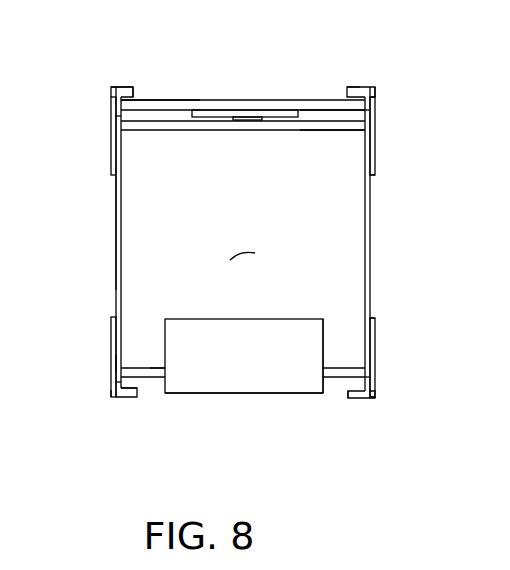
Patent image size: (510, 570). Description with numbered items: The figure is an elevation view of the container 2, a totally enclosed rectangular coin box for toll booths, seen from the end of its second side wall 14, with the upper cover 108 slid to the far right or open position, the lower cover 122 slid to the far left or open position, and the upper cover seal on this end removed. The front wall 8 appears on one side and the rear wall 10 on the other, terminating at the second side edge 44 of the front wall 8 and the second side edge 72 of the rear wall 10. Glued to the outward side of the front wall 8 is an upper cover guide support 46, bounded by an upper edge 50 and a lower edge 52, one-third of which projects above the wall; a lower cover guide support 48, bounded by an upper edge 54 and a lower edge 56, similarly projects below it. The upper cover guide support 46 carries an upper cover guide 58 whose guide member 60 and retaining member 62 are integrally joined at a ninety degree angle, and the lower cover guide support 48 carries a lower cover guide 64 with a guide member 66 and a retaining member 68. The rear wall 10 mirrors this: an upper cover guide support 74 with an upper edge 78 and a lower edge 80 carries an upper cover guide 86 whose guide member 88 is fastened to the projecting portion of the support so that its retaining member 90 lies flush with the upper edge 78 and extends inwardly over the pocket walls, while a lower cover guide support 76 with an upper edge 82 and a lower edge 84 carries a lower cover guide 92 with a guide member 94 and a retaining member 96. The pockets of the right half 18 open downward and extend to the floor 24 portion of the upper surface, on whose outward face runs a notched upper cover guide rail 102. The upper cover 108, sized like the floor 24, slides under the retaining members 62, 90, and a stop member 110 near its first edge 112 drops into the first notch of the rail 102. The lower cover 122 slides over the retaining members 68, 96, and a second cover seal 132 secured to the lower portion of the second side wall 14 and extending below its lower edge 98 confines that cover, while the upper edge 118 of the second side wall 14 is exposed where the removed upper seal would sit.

The container 2 is at (245, 420).
The front wall 8 is at (116, 244).
The rear wall 10 is at (370, 220).
The second side wall 14 is at (255, 253).
The right half 18 is at (280, 440).
The floor 24 is at (207, 128).
The second side edge 44 is at (116, 282).
The upper cover guide support 46 is at (111, 158).
The lower cover guide support 48 is at (116, 364).
The upper edge 50 is at (114, 88).
The lower edge 52 is at (116, 190).
The upper edge 54 is at (111, 316).
The lower edge 56 is at (111, 400).
The upper cover guide 58 is at (123, 86).
The guide member 60 is at (121, 116).
The retaining member 62 is at (131, 92).
The lower cover guide 64 is at (137, 398).
The guide member 66 is at (121, 382).
The retaining member 68 is at (125, 398).
The second side edge 72 is at (370, 252).
The upper cover guide support 74 is at (375, 157).
The lower cover guide support 76 is at (375, 352).
The upper edge 78 is at (372, 95).
The lower edge 80 is at (372, 177).
The upper edge 82 is at (372, 318).
The lower edge 84 is at (372, 400).
The upper cover guide 86 is at (350, 87).
The guide member 88 is at (365, 110).
The retaining member 90 is at (362, 88).
The lower cover guide 92 is at (368, 400).
The guide member 94 is at (365, 377).
The retaining member 96 is at (352, 398).
The lower edge 98 is at (156, 366).
The upper cover guide rail 102 is at (250, 120).
The upper cover 108 is at (196, 102).
The stop member 110 is at (276, 112).
The first edge 112 is at (314, 110).
The upper edge 118 is at (313, 130).
The lower cover 122 is at (140, 368).
The second cover seal 132 is at (210, 380).